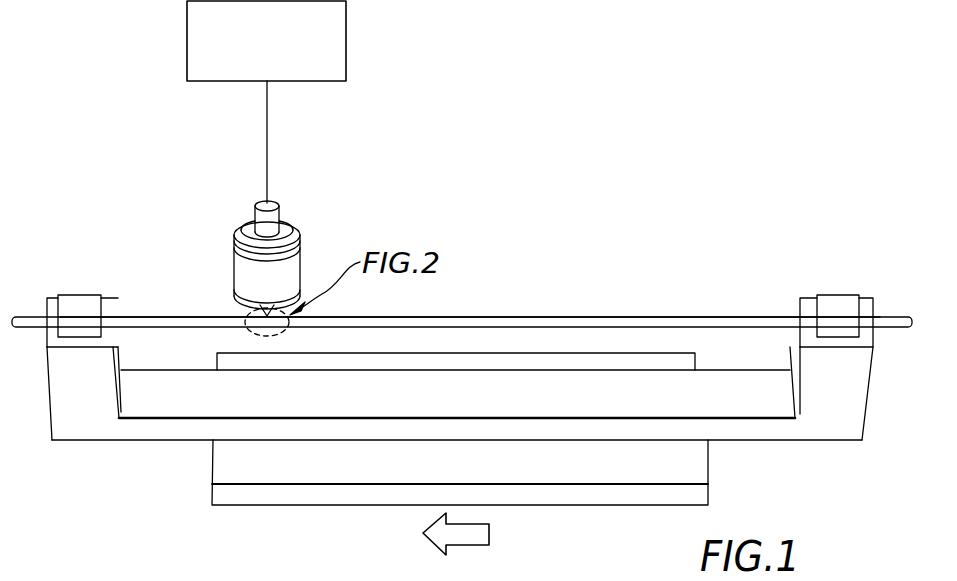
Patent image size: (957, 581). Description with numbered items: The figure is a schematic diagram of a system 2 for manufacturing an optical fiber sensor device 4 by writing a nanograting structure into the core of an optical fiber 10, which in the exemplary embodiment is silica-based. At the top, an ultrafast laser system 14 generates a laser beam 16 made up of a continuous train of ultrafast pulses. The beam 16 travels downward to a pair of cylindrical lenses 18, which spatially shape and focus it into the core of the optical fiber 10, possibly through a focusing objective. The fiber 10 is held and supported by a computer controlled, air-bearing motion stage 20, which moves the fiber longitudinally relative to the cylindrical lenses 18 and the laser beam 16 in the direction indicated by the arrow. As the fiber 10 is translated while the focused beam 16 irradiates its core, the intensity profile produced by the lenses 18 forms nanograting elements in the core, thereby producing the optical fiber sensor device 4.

The system 2 is at (558, 168).
The optical fiber sensor device 4 is at (624, 311).
The optical fiber 10 is at (897, 320).
The ultrafast laser system 14 is at (347, 39).
The laser beam 16 is at (267, 134).
The cylindrical lenses 18 is at (232, 243).
The motion stage 20 is at (867, 403).